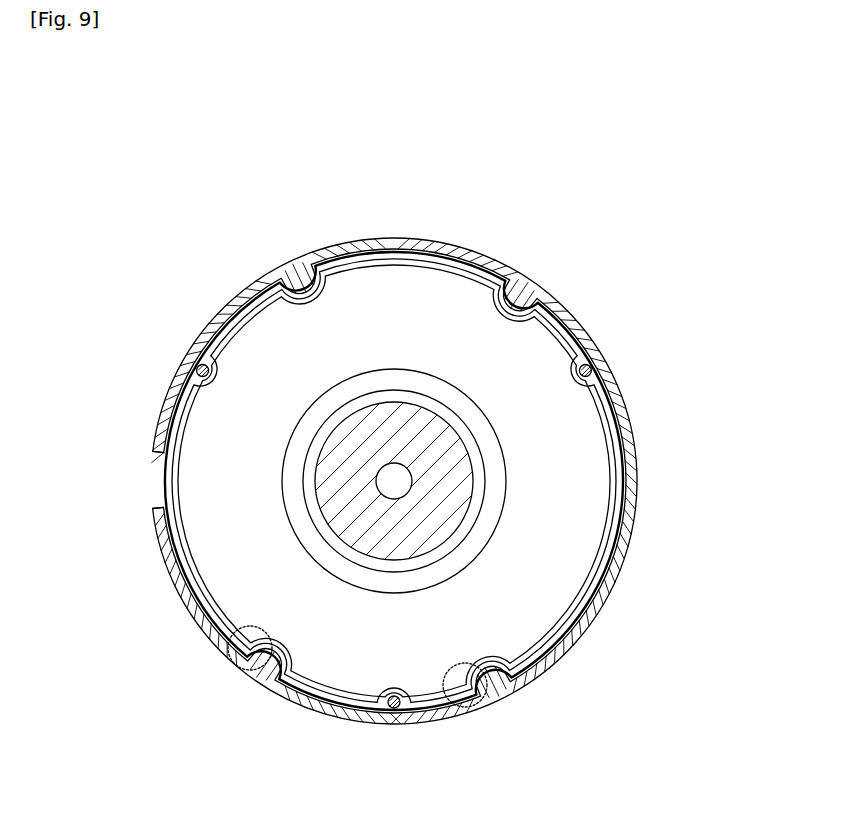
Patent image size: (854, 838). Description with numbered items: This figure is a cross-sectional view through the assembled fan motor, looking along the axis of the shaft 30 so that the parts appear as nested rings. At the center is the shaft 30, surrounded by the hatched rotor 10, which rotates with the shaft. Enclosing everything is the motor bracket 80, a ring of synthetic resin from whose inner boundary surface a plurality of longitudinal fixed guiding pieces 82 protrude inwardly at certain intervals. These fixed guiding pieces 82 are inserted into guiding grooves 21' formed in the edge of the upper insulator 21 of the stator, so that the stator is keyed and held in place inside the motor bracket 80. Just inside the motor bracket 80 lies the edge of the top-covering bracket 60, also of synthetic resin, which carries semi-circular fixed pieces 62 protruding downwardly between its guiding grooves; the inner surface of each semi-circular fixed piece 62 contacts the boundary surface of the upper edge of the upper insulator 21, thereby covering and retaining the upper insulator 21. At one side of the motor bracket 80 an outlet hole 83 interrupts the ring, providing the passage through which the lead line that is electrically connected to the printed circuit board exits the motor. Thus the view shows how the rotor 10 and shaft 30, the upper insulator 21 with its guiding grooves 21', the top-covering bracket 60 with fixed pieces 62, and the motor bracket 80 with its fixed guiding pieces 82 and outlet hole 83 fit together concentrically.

The rotor 10 is at (385, 428).
The upper insulator 21 is at (413, 480).
The guiding groove 21' is at (311, 711).
The shaft 30 is at (403, 477).
The top-covering bracket 60 is at (447, 250).
The semi-circular fixed piece 62 is at (193, 362).
The motor bracket 80 is at (620, 568).
The fixed guiding piece 82 is at (296, 263).
The outlet hole 83 is at (158, 487).